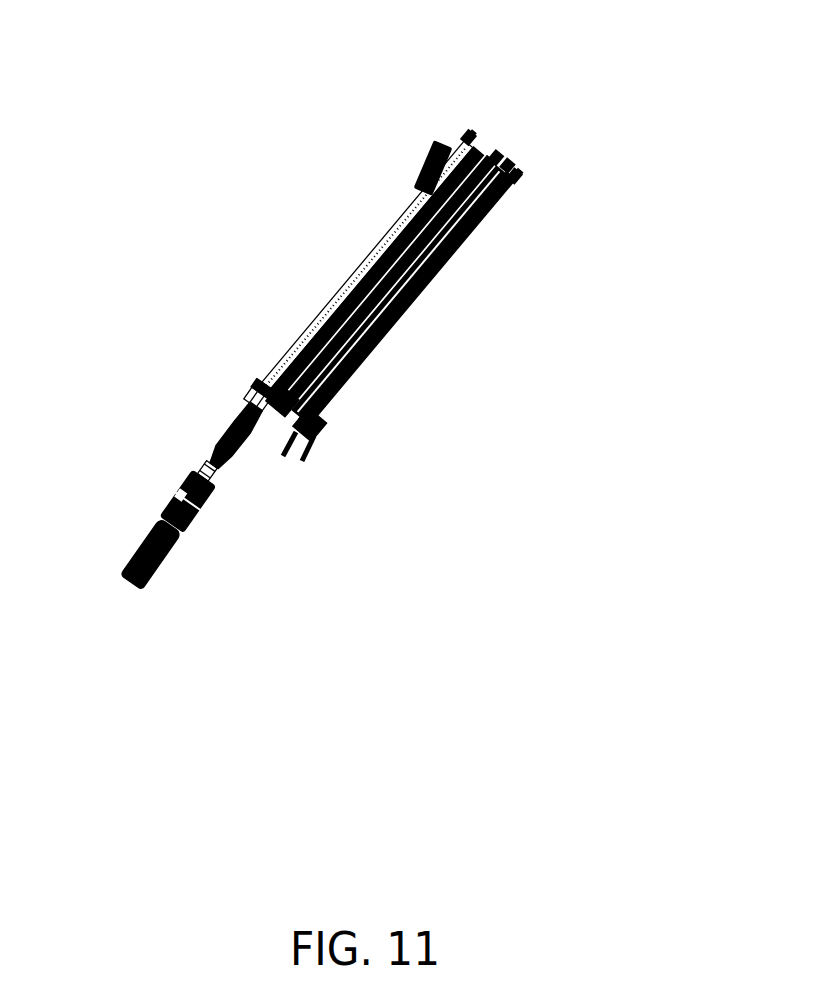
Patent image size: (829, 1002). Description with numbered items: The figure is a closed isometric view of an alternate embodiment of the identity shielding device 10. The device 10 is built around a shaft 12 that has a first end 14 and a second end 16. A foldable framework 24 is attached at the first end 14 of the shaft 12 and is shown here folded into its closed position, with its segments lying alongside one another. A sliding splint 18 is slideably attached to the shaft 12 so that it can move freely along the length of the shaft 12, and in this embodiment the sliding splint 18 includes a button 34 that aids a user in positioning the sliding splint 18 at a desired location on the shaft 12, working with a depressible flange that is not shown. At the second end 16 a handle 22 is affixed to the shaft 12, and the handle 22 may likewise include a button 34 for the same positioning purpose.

The identity shielding device 10 is at (139, 102).
The first end 14 is at (396, 122).
The shaft 12 is at (332, 297).
The framework 24 is at (514, 229).
The button 34 is at (250, 392).
The sliding splint 18 is at (227, 443).
The second end 16 is at (224, 553).
The handle 22 is at (135, 583).